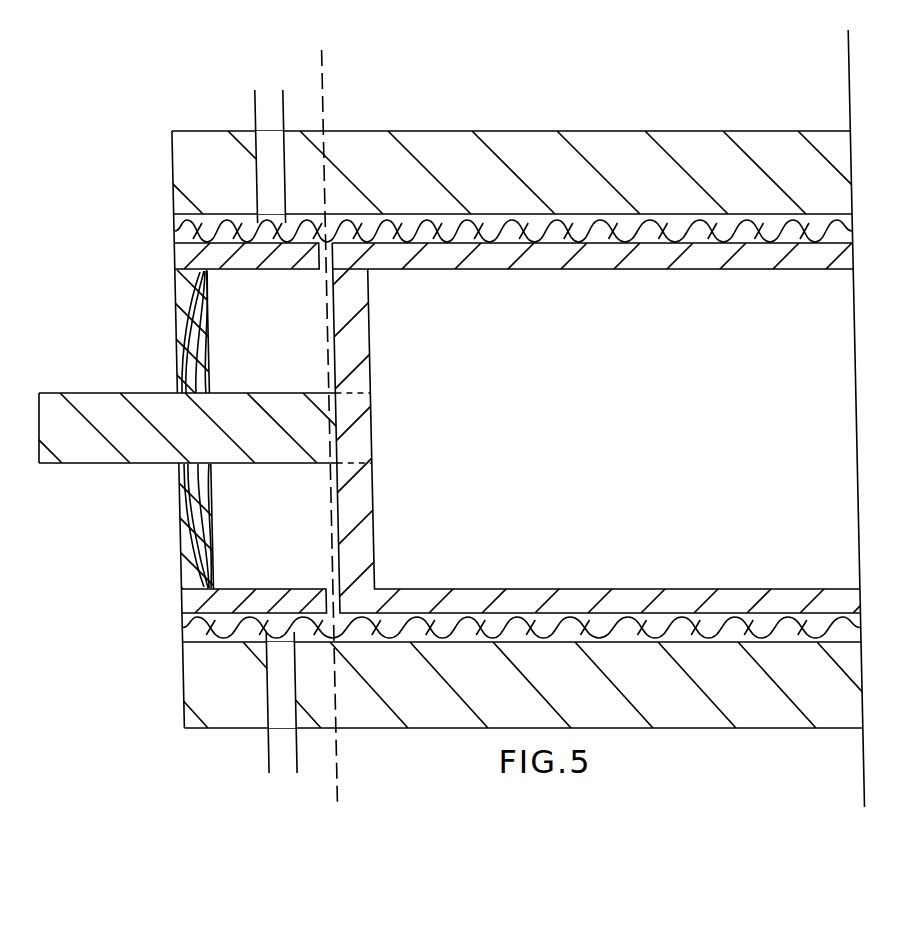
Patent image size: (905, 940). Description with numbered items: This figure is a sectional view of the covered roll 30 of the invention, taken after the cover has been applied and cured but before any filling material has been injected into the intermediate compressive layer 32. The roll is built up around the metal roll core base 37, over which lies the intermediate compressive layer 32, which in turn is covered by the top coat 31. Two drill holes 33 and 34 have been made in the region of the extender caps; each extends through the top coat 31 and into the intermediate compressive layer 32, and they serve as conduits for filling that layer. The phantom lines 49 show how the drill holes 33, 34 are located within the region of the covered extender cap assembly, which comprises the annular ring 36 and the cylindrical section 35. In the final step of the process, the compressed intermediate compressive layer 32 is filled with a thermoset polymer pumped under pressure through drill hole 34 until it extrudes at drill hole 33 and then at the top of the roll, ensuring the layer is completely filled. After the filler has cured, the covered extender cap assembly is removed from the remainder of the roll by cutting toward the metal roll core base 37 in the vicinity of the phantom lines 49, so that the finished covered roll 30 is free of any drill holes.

The covered roll 30 is at (165, 78).
The top coat 31 is at (384, 158).
The intermediate compressive layer 32 is at (452, 228).
The drill hole 33 is at (268, 96).
The drill hole 34 is at (282, 765).
The cylindrical section 35 is at (174, 252).
The annular ring 36 is at (177, 338).
The metal roll core base 37 is at (545, 255).
The phantom lines 49 is at (322, 416).